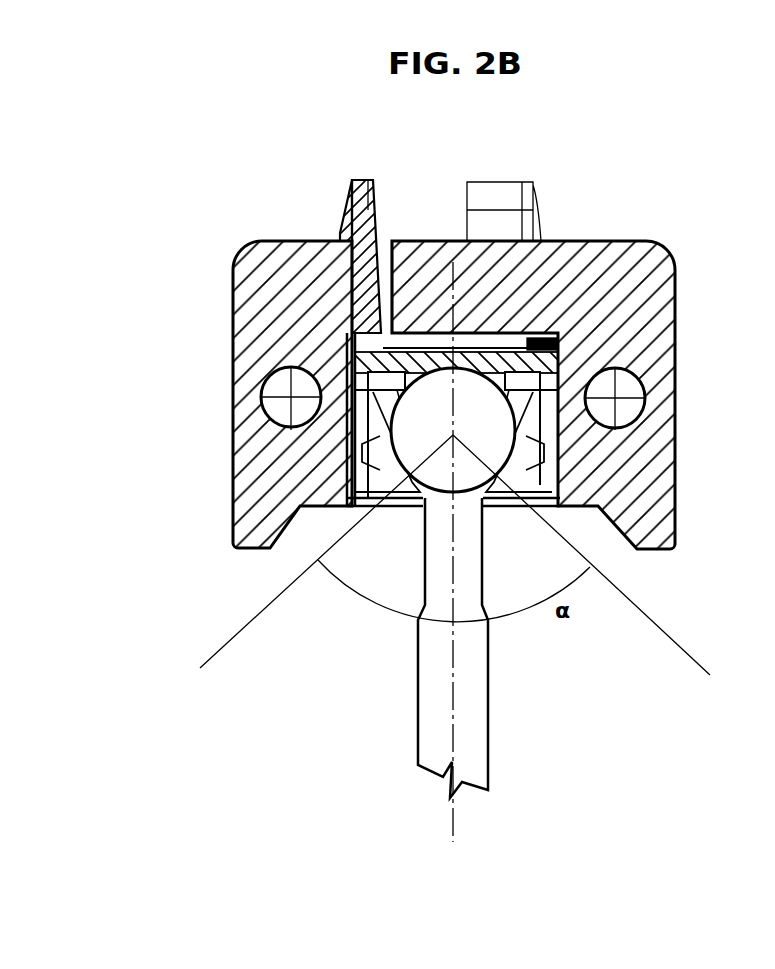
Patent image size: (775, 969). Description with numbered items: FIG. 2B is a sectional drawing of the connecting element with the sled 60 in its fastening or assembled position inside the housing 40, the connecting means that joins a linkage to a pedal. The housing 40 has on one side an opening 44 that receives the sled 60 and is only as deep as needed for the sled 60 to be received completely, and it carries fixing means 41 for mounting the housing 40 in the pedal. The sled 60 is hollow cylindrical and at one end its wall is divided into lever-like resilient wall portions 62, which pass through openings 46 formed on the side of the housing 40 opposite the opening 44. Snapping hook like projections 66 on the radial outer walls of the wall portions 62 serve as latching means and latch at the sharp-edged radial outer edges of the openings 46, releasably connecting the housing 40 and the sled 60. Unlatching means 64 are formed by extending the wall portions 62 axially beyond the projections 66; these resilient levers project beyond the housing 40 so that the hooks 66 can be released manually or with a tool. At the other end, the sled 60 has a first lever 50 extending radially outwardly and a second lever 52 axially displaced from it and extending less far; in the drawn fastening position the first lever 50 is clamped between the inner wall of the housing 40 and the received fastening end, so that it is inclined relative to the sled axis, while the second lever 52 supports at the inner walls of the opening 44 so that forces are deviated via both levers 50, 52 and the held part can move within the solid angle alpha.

The housing 40 is at (660, 527).
The fixing means 41 is at (281, 401).
The opening 44 is at (343, 462).
The openings 46 is at (389, 252).
The first lever 50 is at (346, 502).
The second lever 52 is at (370, 423).
The sled 60 is at (488, 364).
The wall portions 62 is at (347, 283).
The unlatching means 64 is at (360, 180).
The snapping hook like projections 66 is at (350, 222).